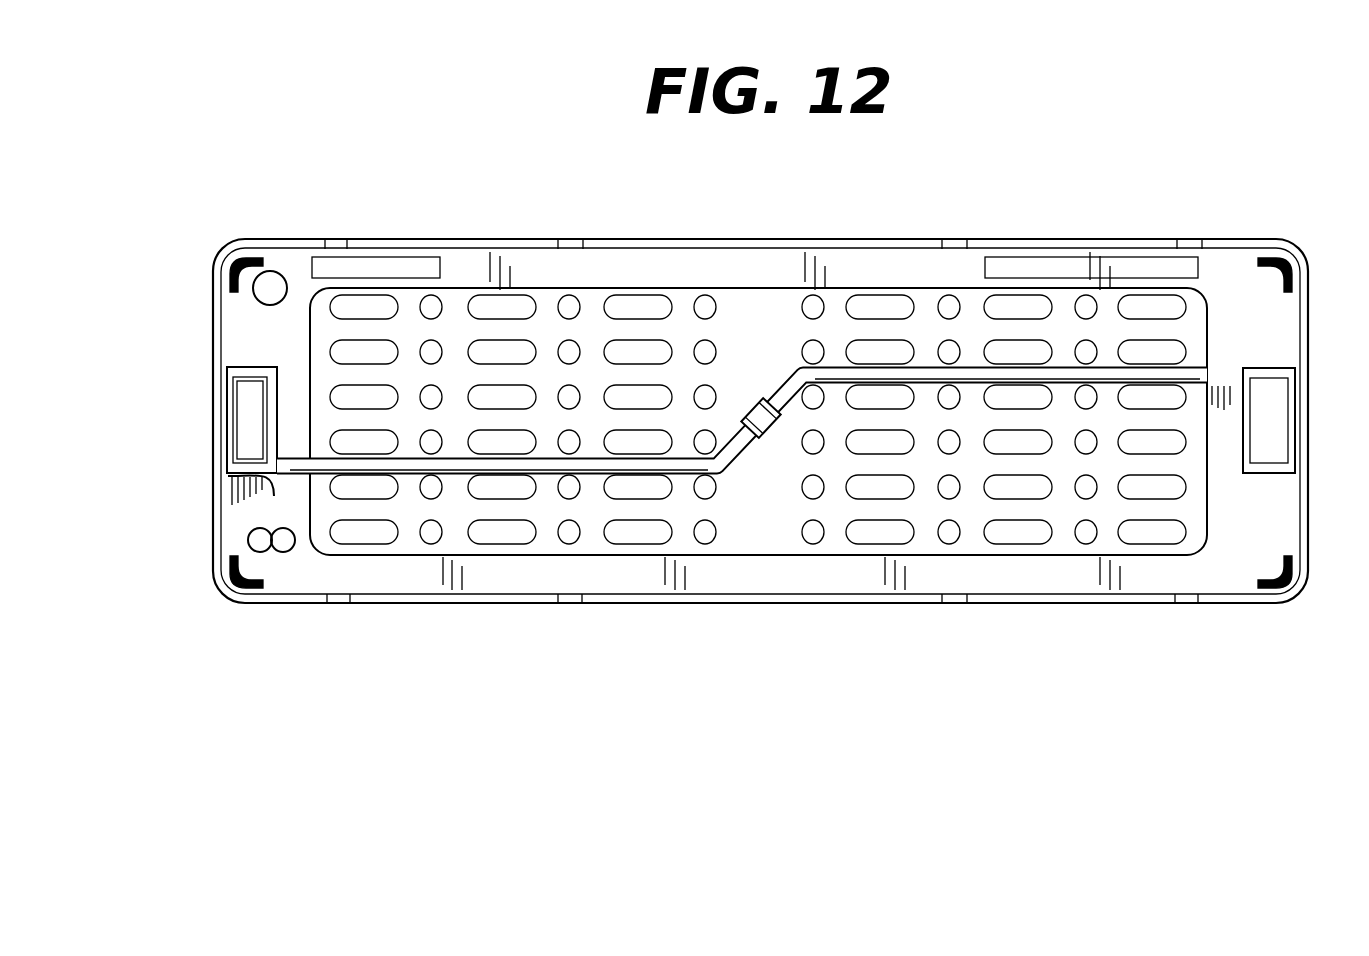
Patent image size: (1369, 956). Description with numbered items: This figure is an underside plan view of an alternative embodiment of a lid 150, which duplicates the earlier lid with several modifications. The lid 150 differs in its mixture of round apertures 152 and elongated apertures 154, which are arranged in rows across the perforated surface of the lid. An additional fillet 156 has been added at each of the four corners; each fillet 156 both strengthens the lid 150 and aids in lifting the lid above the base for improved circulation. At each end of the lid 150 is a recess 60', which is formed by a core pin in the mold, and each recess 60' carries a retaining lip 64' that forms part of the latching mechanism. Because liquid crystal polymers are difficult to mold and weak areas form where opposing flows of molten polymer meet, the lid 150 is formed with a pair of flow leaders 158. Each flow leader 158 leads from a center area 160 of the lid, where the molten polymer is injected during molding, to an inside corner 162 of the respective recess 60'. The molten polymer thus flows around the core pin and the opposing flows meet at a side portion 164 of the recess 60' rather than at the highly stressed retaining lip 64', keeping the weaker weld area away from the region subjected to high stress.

The lid 150 is at (560, 624).
The round apertures 152 is at (707, 305).
The elongated apertures 154 is at (636, 303).
The fillet 156 is at (272, 262).
The flow leaders 158 is at (788, 412).
The center area 160 is at (756, 418).
The inside corner 162 is at (1243, 380).
The side portion 164 is at (255, 368).
The recess 60' is at (197, 419).
The retaining lip 64' is at (187, 424).